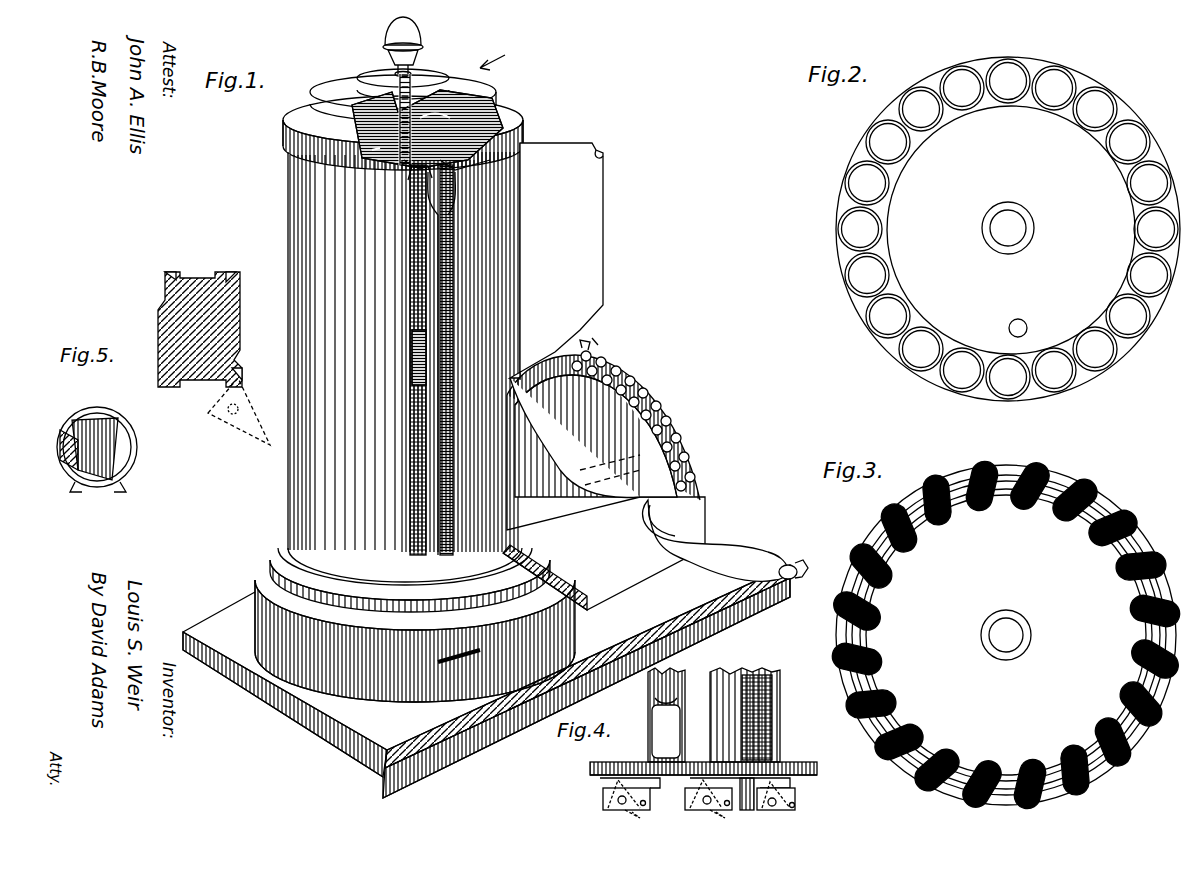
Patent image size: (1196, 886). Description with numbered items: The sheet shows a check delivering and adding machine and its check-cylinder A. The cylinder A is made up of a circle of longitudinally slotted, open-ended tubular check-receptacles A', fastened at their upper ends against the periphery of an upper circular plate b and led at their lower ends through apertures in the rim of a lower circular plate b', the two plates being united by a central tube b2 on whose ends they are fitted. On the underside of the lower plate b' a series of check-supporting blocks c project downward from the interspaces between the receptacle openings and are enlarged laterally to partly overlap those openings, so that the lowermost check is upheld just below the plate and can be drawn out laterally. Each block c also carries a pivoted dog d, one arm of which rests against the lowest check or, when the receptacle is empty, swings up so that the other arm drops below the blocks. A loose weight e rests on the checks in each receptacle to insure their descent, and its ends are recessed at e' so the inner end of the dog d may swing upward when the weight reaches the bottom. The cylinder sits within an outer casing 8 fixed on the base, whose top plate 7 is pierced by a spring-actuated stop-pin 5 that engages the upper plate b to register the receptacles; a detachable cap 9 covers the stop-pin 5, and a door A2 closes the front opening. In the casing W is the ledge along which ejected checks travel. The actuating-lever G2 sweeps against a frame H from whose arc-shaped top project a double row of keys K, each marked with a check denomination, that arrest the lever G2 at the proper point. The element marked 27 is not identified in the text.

In FIG. 1, the check-cylinder A is at (403, 324).
In FIG. 2, the check-cylinder A is at (998, 205).
In FIG. 3, the check-cylinder A is at (1006, 635).
In FIG. 1, the check-receptacle A' is at (438, 357).
In FIG. 2, the check-receptacle A' is at (1008, 229).
In FIG. 3, the check-receptacle A' is at (1006, 629).
In FIG. 4, the check-receptacle A' is at (714, 700).
In FIG. 1, the door A2 is at (556, 260).
In FIG. 1, the casing W is at (486, 647).
In FIG. 1, the slot 27 is at (454, 665).
In FIG. 1, the outer casing 8 is at (327, 355).
In FIG. 1, the top plate 7 is at (360, 128).
In FIG. 1, the detachable cap 9 is at (403, 89).
In FIG. 1, the stop-pin 5 is at (478, 80).
In FIG. 1, the upper circular plate b is at (429, 179).
In FIG. 2, the upper circular plate b is at (1013, 311).
In FIG. 3, the lower circular plate b' is at (1006, 557).
In FIG. 4, the lower circular plate b' is at (703, 764).
In FIG. 2, the central tube b2 is at (1030, 238).
In FIG. 3, the central tube b2 is at (1020, 622).
In FIG. 1, the supporting block or frame H is at (603, 437).
In FIG. 1, the key K is at (644, 414).
In FIG. 1, the actuating-lever G2 is at (725, 540).
In FIG. 3, the check-supporting block c is at (990, 765).
In FIG. 4, the check-supporting block c is at (685, 795).
In FIG. 3, the dog d is at (1130, 600).
In FIG. 4, the dog d is at (820, 803).
In FIG. 5, the dog d is at (239, 412).
In FIG. 4, the weight e is at (666, 728).
In FIG. 5, the weight e is at (157, 382).
In FIG. 5, the recess e' is at (150, 368).